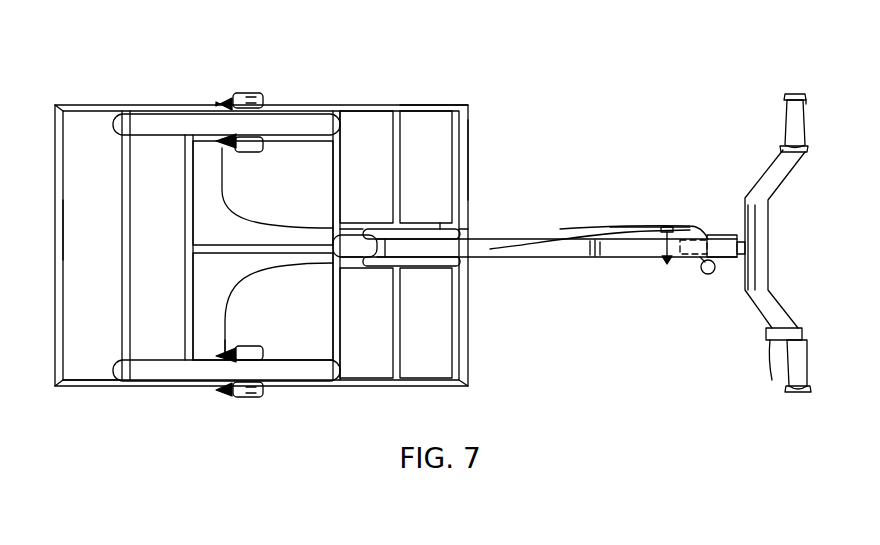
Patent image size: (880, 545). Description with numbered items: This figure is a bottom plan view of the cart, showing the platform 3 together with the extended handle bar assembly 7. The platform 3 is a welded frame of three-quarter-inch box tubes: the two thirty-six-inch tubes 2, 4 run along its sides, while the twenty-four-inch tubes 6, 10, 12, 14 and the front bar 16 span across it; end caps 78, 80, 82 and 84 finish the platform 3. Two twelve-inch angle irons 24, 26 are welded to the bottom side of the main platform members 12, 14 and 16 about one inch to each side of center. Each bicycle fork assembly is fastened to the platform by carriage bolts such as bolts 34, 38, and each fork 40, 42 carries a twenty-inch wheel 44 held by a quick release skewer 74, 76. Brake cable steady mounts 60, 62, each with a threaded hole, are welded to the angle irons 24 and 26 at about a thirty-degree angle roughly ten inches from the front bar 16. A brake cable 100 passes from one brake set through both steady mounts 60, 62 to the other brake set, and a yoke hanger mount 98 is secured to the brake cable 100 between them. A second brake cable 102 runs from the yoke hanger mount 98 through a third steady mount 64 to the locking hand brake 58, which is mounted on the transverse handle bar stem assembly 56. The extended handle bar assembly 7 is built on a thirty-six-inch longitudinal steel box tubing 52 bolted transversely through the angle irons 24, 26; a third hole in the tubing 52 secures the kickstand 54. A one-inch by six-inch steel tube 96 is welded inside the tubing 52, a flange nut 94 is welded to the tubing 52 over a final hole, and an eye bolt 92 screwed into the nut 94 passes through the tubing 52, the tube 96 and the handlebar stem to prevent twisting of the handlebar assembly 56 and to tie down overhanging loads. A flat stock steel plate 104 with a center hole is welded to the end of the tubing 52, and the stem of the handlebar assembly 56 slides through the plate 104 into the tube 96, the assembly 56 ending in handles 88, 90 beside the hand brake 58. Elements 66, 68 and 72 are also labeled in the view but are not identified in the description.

The box tube 2 is at (120, 110).
The platform 3 is at (442, 105).
The box tube 4 is at (98, 388).
The box tube 6 is at (58, 232).
The extended handle bar assembly 7 is at (806, 120).
The box tube 10 is at (188, 213).
The main platform member 12 is at (350, 112).
The main platform member 14 is at (403, 111).
The front bar 16 is at (468, 158).
The angle iron 24 is at (446, 228).
The angle iron 26 is at (422, 270).
The carriage bolt 34 is at (268, 150).
The carriage bolt 38 is at (278, 348).
The bicycle fork 40 is at (254, 100).
The bicycle fork 42 is at (256, 397).
The wheel 44 is at (164, 114).
The longitudinal steel box tubing 52 is at (590, 258).
The kickstand 54 is at (666, 232).
The transverse handle bar stem assembly 56 is at (768, 218).
The locking hand brake 58 is at (768, 336).
The brake cable steady mount 60 is at (362, 227).
The brake cable steady mount 62 is at (360, 270).
The third steady mount 64 is at (498, 242).
The lower bar end 66 is at (322, 262).
The lower transverse bar 68 is at (466, 266).
The bar end 72 is at (465, 222).
The quick release skewer 74 is at (224, 104).
The quick release skewer 76 is at (226, 394).
The end cap 78 is at (463, 104).
The end cap 80 is at (468, 384).
The end cap 82 is at (55, 386).
The end cap 84 is at (55, 108).
The handle 88 is at (788, 122).
The handle 90 is at (792, 392).
The eye bolt 92 is at (706, 274).
The flange nut 94 is at (700, 260).
The steel tube 96 is at (712, 235).
The yoke hanger mount 98 is at (392, 250).
The brake cable 100 is at (236, 252).
The second brake cable 102 is at (600, 230).
The flat stock steel plate 104 is at (740, 242).